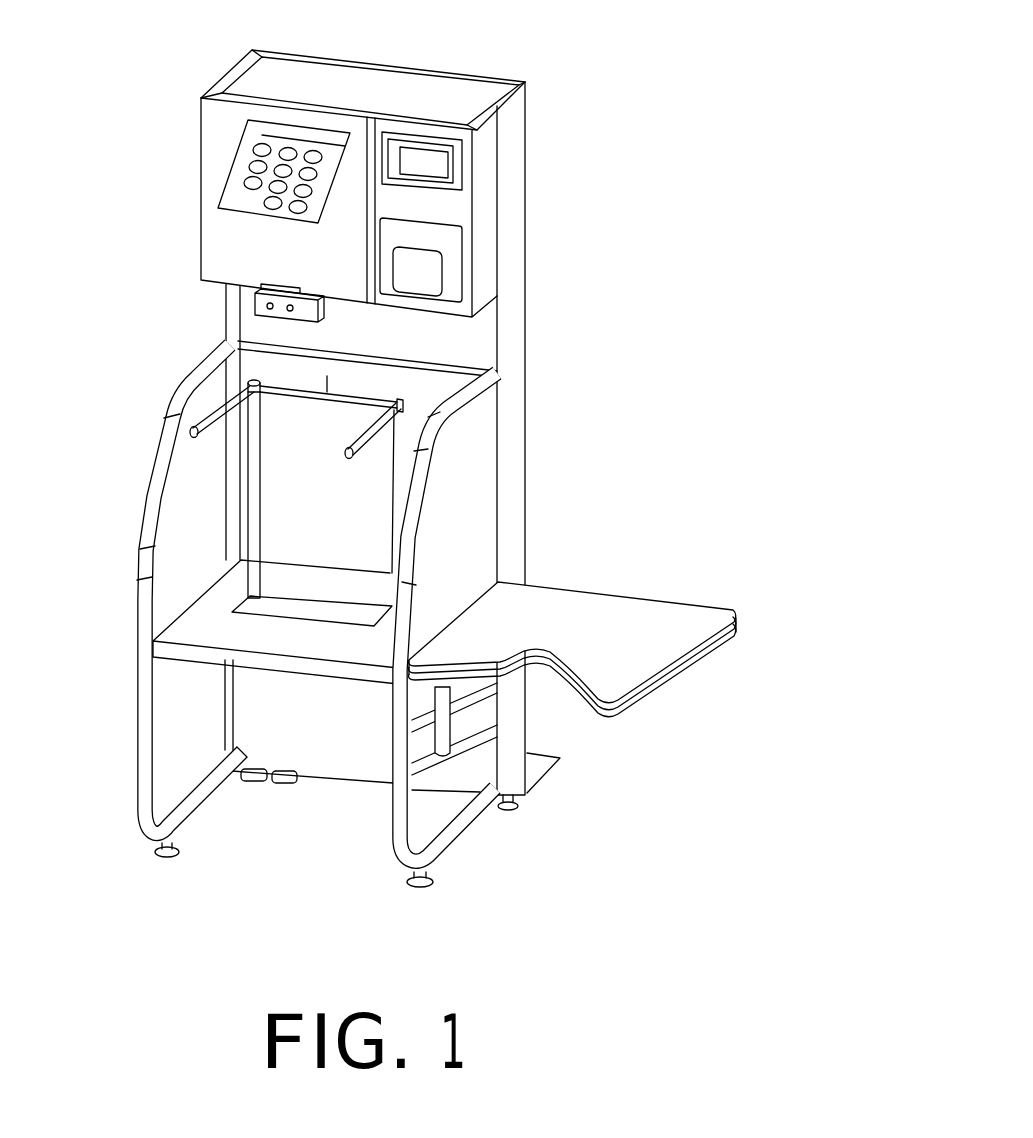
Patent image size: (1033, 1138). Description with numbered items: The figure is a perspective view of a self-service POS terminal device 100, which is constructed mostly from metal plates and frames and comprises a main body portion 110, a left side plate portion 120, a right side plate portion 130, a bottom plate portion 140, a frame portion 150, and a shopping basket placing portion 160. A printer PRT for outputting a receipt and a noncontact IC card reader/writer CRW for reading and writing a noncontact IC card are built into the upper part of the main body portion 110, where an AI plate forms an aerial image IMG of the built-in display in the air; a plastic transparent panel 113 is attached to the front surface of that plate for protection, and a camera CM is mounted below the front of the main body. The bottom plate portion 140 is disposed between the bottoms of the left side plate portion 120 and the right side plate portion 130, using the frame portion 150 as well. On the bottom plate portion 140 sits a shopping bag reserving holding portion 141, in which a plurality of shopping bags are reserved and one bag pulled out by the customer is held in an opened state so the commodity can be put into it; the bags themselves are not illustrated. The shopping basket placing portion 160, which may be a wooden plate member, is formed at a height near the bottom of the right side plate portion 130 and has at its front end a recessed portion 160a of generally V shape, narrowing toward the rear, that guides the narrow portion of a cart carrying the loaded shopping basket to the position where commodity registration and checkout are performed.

The self-service POS terminal device 100 is at (549, 64).
The main body portion 110 is at (507, 350).
The transparent panel 113 is at (247, 248).
The left side plate portion 120 is at (153, 503).
The right side plate portion 130 is at (480, 477).
The bottom plate portion 140 is at (200, 625).
The shopping bag reserving holding portion 141 is at (253, 418).
The frame portion 150 is at (392, 770).
The shopping basket placing portion 160 is at (572, 648).
The recessed portion 160a is at (570, 681).
The aerial image IMG is at (247, 156).
The printer PRT is at (435, 163).
The noncontact IC card reader/writer CRW is at (428, 268).
The camera CM is at (262, 296).